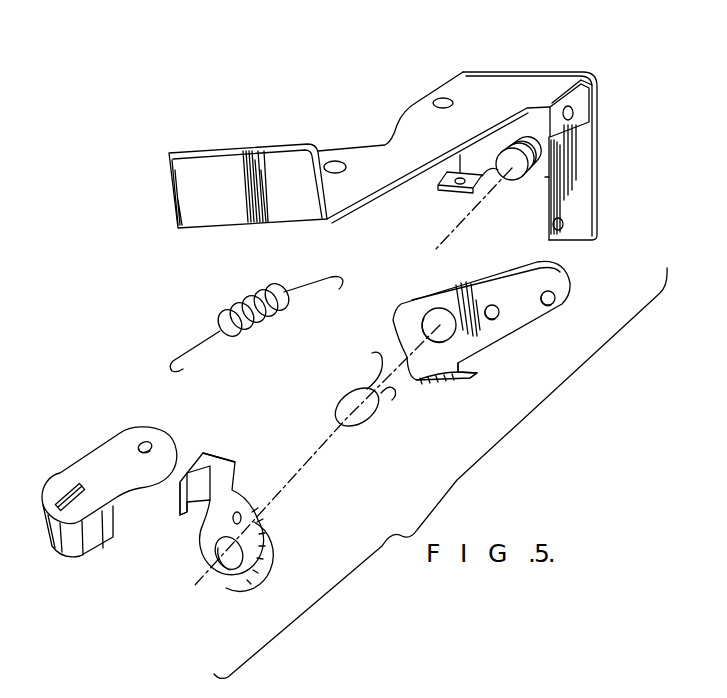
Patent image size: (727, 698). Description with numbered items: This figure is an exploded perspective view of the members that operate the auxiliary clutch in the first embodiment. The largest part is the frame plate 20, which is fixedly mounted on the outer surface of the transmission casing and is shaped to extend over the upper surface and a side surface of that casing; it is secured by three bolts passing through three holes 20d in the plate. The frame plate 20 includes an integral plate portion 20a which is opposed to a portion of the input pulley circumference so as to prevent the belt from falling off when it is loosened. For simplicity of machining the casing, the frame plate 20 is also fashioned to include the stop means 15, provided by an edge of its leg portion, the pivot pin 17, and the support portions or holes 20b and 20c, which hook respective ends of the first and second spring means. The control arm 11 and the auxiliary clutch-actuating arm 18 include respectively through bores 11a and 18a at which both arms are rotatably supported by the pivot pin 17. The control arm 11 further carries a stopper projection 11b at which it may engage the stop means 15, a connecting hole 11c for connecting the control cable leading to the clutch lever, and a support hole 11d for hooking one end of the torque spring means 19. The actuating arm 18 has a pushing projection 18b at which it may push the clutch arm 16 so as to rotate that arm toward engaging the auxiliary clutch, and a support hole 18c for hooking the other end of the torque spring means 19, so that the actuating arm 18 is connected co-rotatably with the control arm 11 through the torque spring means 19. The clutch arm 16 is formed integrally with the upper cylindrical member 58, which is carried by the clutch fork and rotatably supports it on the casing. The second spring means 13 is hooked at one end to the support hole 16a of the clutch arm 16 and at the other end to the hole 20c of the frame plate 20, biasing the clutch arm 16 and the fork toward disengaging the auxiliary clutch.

The control arm 11 is at (533, 337).
The through bore 11a is at (429, 306).
The stopper projection 11b is at (468, 376).
The connecting hole 11c is at (547, 305).
The support hole 11d is at (493, 305).
The second spring means 13 is at (262, 322).
The stop means 15 is at (547, 177).
The clutch arm 16 is at (119, 443).
The support hole 16a is at (150, 441).
The pivot pin 17 is at (538, 152).
The auxiliary clutch-actuating arm 18 is at (263, 537).
The through bore 18a is at (221, 566).
The pushing projection 18b is at (189, 462).
The support hole 18c is at (208, 512).
The torque spring means 19 is at (340, 400).
The frame plate 20 is at (420, 118).
The plate portion 20a is at (240, 143).
The support portion 20b is at (560, 232).
The support portion 20c is at (578, 110).
The holes 20d is at (336, 160).
The upper cylindrical member 58 is at (80, 553).